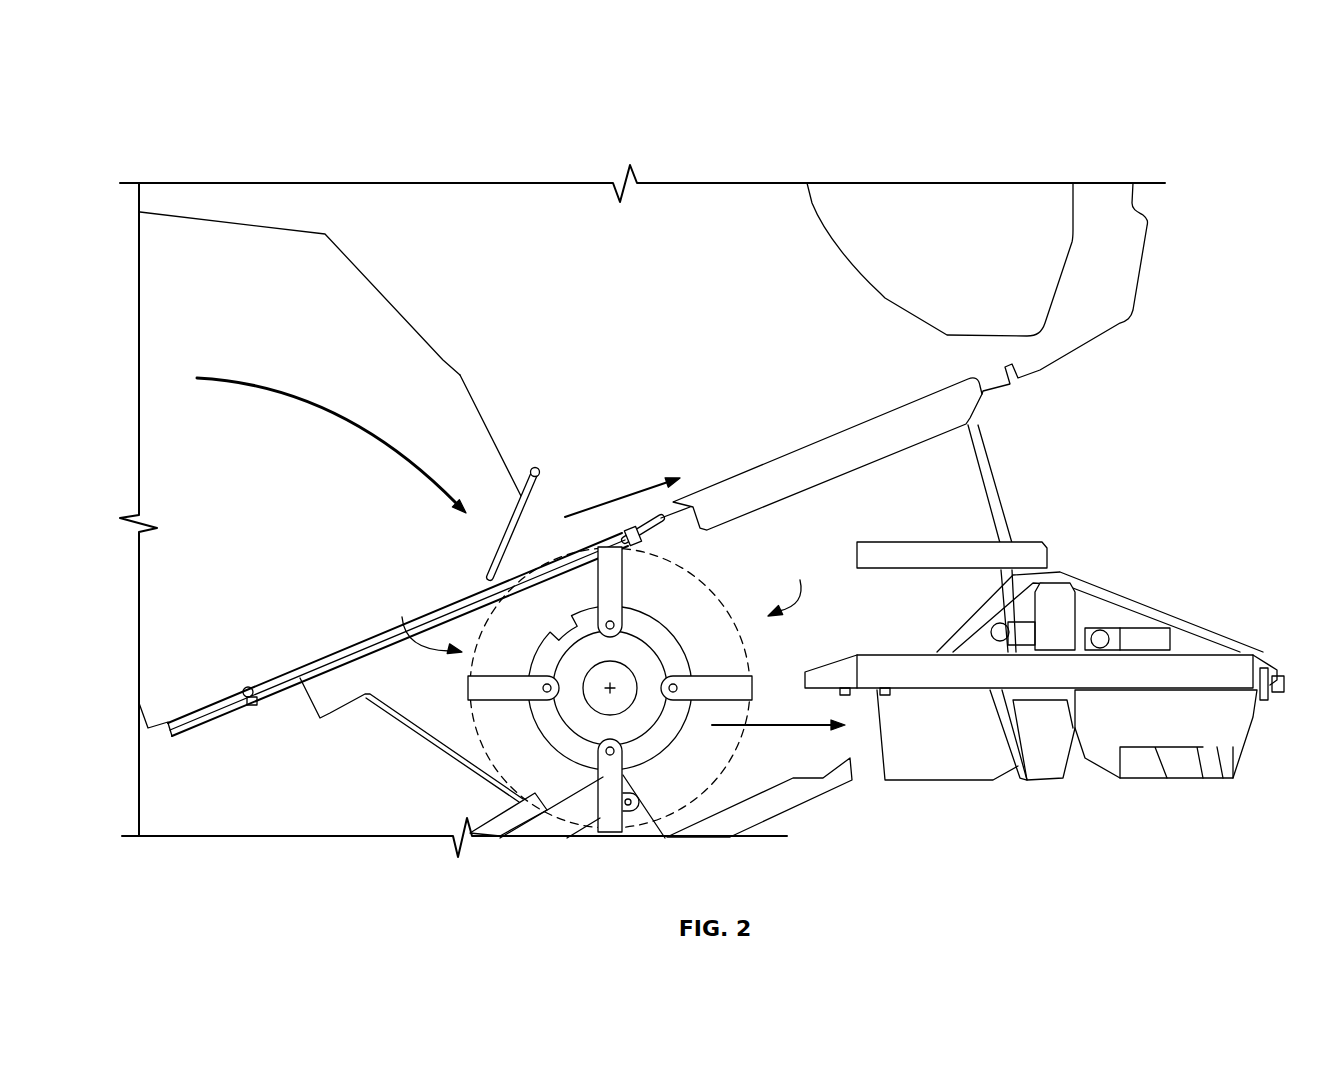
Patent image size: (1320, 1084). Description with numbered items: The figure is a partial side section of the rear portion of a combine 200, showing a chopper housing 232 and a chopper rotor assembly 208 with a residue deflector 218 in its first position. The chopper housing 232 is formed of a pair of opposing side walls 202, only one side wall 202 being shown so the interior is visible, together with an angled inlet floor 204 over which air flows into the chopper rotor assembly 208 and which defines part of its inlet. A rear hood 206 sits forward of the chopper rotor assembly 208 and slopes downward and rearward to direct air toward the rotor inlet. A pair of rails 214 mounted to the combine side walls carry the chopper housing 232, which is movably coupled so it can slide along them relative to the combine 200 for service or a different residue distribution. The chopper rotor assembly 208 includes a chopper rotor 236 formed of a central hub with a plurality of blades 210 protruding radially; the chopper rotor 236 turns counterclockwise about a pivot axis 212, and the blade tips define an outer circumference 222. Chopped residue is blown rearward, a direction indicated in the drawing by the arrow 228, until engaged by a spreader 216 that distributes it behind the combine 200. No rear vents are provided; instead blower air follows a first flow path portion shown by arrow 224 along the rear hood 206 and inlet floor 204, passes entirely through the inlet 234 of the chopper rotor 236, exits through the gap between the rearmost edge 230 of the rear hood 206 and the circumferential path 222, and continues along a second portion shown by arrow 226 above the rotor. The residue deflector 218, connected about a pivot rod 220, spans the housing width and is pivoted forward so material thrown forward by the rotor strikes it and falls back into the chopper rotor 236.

The combine 200 is at (192, 100).
The side wall 202 is at (668, 605).
The inlet floor 204 is at (417, 728).
The rear hood 206 is at (443, 362).
The chopper rotor assembly 208 is at (569, 792).
The blades 210 is at (733, 692).
The pivot axis 212 is at (616, 690).
The rails 214 is at (355, 643).
The spreader 216 is at (1143, 797).
The residue deflector 218 is at (523, 497).
The pivot rod 220 is at (539, 468).
The outer circumference 222 is at (486, 622).
The arrow 224 is at (244, 382).
The arrow 226 is at (620, 494).
The discharge direction 228 is at (777, 727).
The rearmost edge 230 is at (510, 510).
The chopper housing 232 is at (793, 584).
The inlet 234 is at (402, 617).
The chopper rotor 236 is at (688, 658).